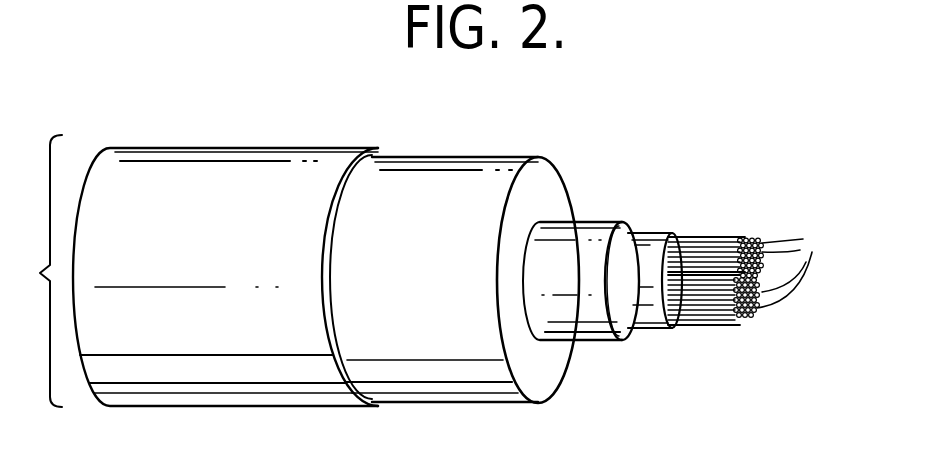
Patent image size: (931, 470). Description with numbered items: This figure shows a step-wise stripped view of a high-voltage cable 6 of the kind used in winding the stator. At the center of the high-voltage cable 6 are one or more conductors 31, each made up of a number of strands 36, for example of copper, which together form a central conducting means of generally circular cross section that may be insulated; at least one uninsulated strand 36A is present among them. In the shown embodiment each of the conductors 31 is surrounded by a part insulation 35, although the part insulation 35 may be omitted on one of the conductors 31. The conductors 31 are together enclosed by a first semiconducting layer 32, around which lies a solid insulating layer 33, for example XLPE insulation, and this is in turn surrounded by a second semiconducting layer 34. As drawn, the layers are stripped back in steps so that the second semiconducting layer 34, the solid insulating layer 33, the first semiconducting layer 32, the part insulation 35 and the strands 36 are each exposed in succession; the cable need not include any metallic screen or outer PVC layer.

The high-voltage cable 6 is at (40, 271).
The conductors 31 is at (716, 268).
The first semiconducting layer 32 is at (597, 218).
The solid insulating layer 33 is at (468, 177).
The second semiconducting layer 34 is at (242, 167).
The part insulation 35 is at (660, 230).
The strands 36 is at (803, 239).
The uninsulated strand 36A is at (732, 296).